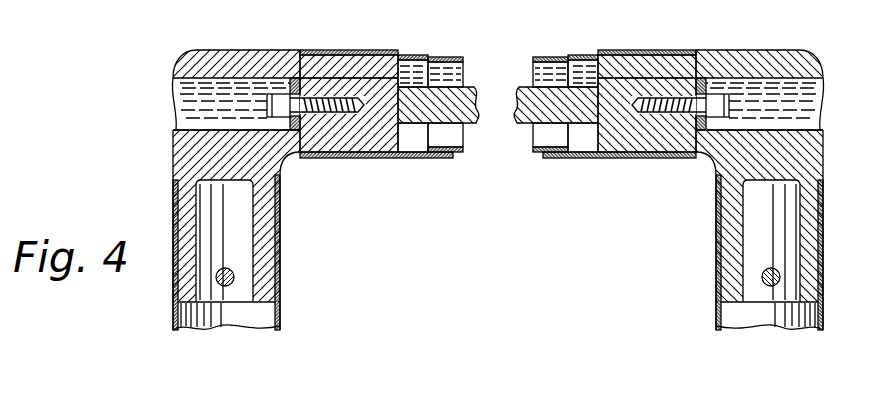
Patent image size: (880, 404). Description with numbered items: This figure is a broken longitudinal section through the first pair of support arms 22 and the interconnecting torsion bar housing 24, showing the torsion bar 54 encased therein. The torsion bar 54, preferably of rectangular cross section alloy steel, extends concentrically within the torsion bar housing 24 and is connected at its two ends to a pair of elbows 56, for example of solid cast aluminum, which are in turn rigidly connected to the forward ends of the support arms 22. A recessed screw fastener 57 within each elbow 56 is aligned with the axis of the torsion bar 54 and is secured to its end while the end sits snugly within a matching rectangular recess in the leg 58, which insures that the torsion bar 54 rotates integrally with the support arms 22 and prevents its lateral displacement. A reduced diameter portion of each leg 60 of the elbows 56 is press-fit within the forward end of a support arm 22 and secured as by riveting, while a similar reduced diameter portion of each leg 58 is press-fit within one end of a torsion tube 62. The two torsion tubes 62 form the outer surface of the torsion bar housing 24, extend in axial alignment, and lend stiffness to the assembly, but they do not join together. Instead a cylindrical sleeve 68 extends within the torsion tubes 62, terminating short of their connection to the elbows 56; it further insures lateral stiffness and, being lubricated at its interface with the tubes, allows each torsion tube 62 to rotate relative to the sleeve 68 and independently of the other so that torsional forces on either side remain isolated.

The support arm 22 is at (276, 303).
The torsion bar housing 24 is at (415, 50).
The torsion bar 54 is at (533, 100).
The elbow 56 is at (189, 50).
The recessed screw fastener 57 is at (318, 104).
The leg 58 is at (373, 140).
The leg 60 is at (265, 235).
The torsion tube 62 is at (383, 55).
The cylindrical sleeve 68 is at (463, 58).